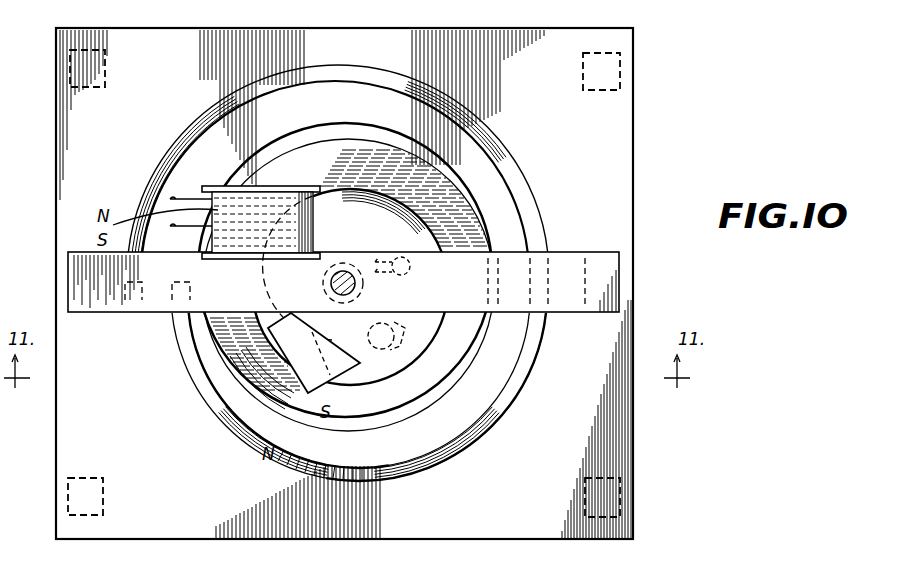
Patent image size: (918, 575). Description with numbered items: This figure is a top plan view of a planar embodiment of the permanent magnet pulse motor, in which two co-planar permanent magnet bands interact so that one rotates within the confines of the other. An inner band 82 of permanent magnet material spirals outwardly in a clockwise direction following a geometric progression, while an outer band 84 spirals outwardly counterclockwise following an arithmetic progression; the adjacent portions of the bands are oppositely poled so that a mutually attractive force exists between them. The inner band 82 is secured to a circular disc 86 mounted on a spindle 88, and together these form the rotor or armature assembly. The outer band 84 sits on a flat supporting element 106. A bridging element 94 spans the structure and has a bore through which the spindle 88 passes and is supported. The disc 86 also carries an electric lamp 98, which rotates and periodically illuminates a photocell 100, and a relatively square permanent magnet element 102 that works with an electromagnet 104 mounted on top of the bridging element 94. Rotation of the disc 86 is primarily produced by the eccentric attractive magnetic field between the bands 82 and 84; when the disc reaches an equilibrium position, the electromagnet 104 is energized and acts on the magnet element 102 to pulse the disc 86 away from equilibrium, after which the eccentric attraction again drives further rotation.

The inner band 82 is at (343, 190).
The outer band 84 is at (532, 200).
The circular disc 86 is at (398, 143).
The spindle 88 is at (331, 283).
The bridging element 94 is at (577, 305).
The electric lamp 98 is at (395, 258).
The photocell 100 is at (420, 340).
The permanent magnet element 102 is at (343, 335).
The electromagnet 104 is at (313, 232).
The flat supporting element 106 is at (365, 128).